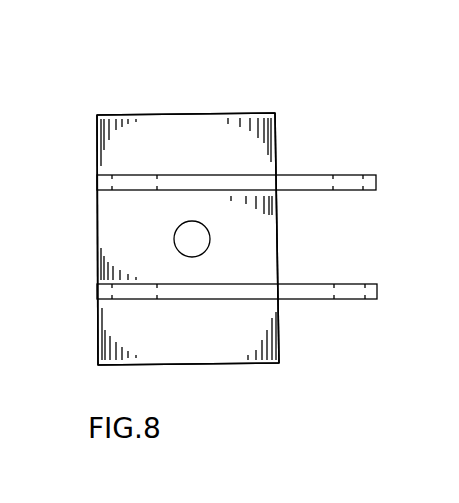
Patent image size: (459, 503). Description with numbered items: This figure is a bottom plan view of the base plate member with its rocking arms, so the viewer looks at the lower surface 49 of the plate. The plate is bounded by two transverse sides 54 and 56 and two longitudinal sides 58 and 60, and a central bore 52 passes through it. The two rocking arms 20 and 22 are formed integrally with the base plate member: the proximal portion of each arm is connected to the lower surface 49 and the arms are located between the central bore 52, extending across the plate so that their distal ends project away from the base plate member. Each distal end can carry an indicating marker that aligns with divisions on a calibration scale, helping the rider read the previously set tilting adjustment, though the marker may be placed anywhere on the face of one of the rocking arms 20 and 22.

The rocking arm 20 is at (310, 174).
The rocking arm 22 is at (328, 299).
The lower surface 49 is at (121, 116).
The central bore 52 is at (175, 238).
The transverse side 54 is at (97, 328).
The transverse side 56 is at (281, 345).
The longitudinal side 58 is at (199, 115).
The longitudinal side 60 is at (198, 366).